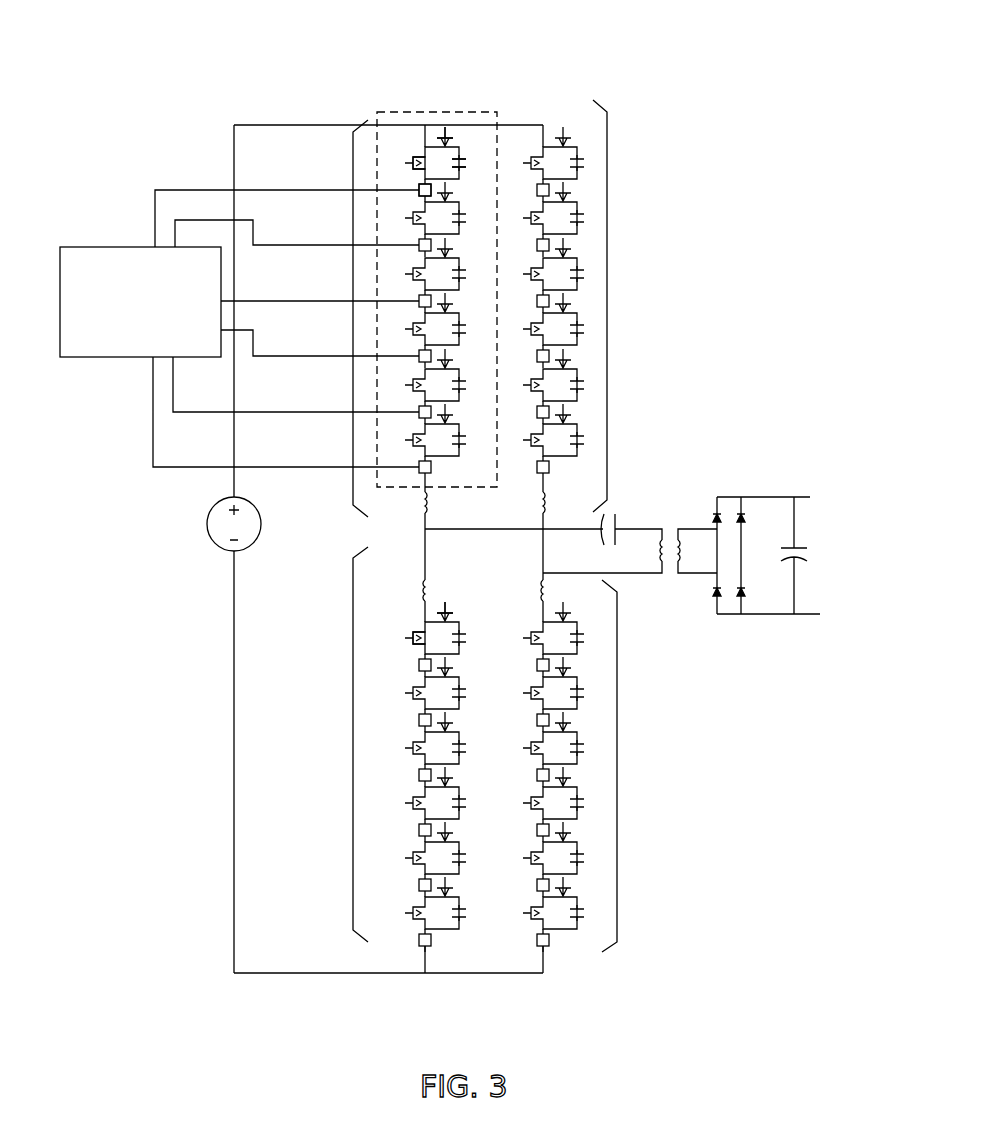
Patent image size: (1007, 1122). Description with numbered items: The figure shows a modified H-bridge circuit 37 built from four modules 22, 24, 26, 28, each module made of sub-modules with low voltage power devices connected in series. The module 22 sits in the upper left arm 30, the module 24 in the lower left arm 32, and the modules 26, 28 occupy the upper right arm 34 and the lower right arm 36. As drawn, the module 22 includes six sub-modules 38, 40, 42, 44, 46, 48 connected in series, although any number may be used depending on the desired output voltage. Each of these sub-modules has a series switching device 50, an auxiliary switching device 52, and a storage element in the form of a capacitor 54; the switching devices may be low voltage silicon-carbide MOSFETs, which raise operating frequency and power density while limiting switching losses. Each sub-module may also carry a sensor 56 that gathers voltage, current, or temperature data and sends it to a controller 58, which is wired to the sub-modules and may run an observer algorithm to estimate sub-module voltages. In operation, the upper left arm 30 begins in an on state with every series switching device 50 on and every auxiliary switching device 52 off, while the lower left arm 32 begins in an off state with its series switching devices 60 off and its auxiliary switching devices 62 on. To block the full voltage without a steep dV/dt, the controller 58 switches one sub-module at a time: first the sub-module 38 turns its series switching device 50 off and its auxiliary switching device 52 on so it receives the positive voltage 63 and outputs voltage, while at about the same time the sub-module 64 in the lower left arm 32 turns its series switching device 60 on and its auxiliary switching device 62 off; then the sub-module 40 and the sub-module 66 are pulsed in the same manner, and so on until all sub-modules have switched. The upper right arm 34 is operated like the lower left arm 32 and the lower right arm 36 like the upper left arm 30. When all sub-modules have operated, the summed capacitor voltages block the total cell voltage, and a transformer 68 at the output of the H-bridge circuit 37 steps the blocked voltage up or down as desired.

The H-bridge circuit 37 is at (200, 53).
The module 22 is at (440, 112).
The module 24 is at (383, 981).
The module 26 is at (614, 332).
The module 28 is at (610, 804).
The upper left arm 30 is at (402, 350).
The lower left arm 32 is at (386, 760).
The upper right arm 34 is at (607, 288).
The lower right arm 36 is at (617, 760).
The sub-module 38 is at (414, 152).
The sub-module 40 is at (410, 226).
The sub-module 42 is at (410, 276).
The sub-module 44 is at (410, 331).
The sub-module 46 is at (410, 386).
The sub-module 48 is at (410, 441).
The series switching device 50 is at (412, 164).
The auxiliary switching device 52 is at (447, 131).
The capacitor 54 is at (465, 163).
The sensor 56 is at (419, 195).
The controller 58 is at (97, 247).
The series switching device 60 is at (412, 640).
The auxiliary switching device 62 is at (448, 614).
The positive voltage 63 is at (210, 506).
The sub-module 64 is at (414, 624).
The sub-module 66 is at (410, 689).
The transformer 68 is at (670, 511).